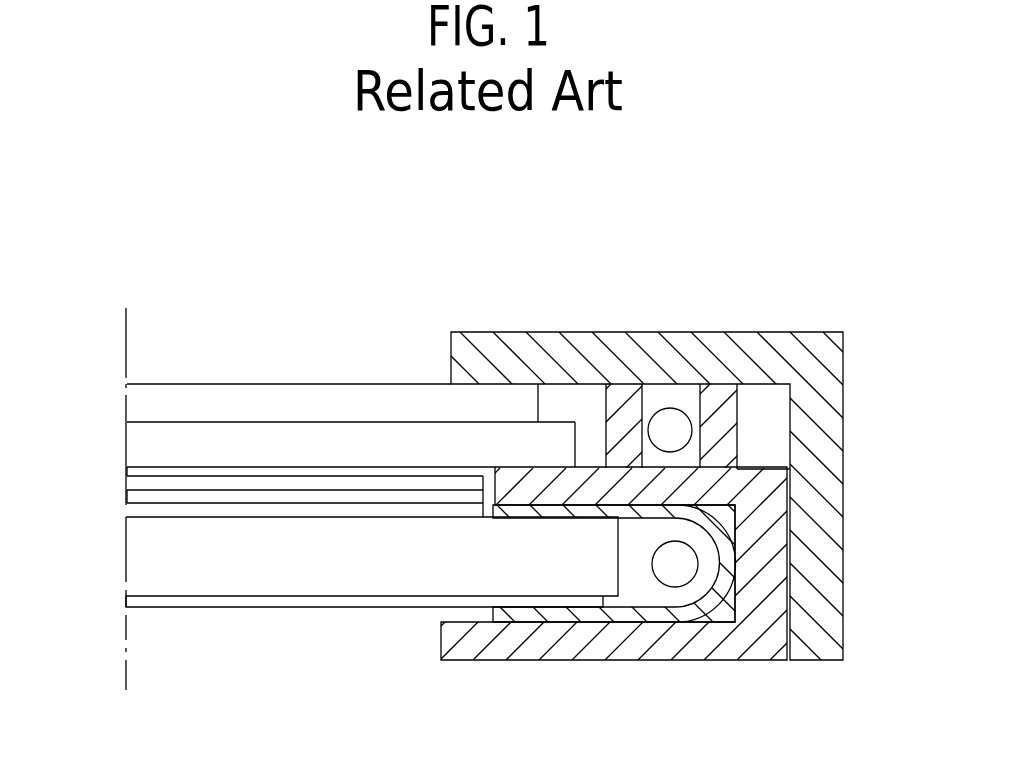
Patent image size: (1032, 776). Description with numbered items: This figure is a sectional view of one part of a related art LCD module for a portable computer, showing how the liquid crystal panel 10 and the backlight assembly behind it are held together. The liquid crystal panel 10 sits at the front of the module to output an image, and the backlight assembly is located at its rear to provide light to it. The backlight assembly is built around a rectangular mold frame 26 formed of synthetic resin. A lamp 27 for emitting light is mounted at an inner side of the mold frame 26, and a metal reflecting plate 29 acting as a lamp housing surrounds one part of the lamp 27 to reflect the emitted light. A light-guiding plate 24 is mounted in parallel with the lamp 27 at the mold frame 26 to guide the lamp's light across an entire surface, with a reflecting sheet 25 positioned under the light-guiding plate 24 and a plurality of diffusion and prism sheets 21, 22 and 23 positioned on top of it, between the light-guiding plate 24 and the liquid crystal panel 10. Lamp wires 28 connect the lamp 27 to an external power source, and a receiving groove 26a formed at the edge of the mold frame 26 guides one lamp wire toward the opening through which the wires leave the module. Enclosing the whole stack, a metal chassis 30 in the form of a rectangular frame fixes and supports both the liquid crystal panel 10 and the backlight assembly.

The liquid crystal panel 10 is at (267, 400).
The diffusion and prism sheet 21 is at (163, 482).
The diffusion and prism sheet 22 is at (140, 493).
The diffusion and prism sheet 23 is at (153, 508).
The light-guiding plate 24 is at (147, 565).
The reflecting sheet 25 is at (228, 600).
The mold frame 26 is at (658, 653).
The receiving groove 26a is at (682, 402).
The lamp 27 is at (677, 565).
The lamp wires 28 is at (670, 420).
The metal reflecting plate 29 is at (528, 613).
The metal chassis 30 is at (812, 462).